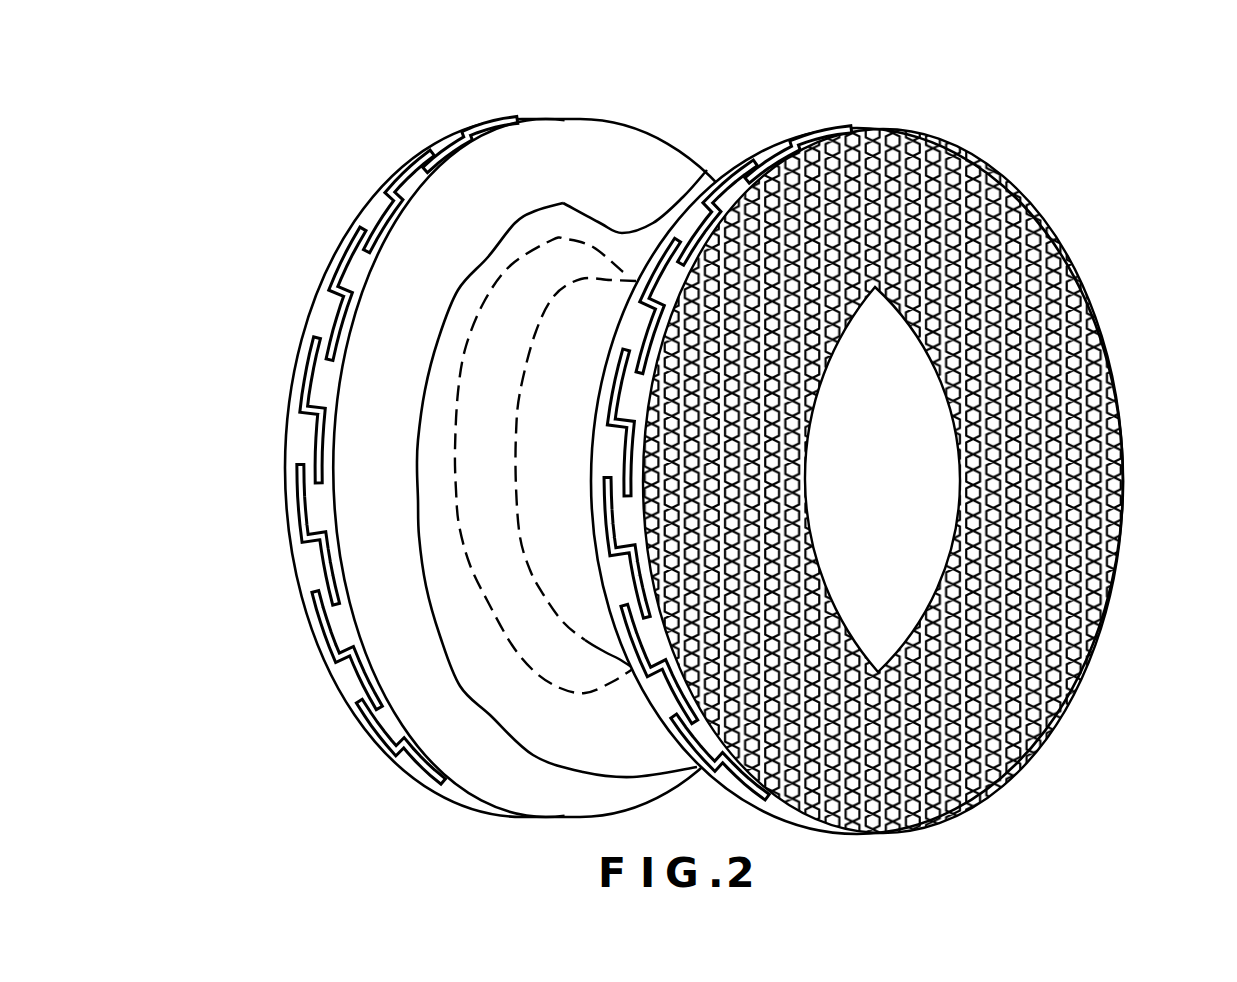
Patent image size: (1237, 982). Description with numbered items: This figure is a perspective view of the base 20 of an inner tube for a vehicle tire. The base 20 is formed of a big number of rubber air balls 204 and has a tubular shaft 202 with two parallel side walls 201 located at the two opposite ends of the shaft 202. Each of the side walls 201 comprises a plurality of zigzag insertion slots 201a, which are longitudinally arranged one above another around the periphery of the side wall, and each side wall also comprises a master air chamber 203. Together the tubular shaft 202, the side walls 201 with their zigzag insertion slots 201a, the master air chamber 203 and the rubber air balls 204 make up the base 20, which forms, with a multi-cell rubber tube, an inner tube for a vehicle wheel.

The base 20 is at (905, 452).
The side walls 201 is at (397, 165).
The zigzag insertion slots 201a is at (295, 397).
The tubular shaft 202 is at (533, 277).
The master air chamber 203 is at (477, 640).
The rubber air balls 204 is at (1088, 352).